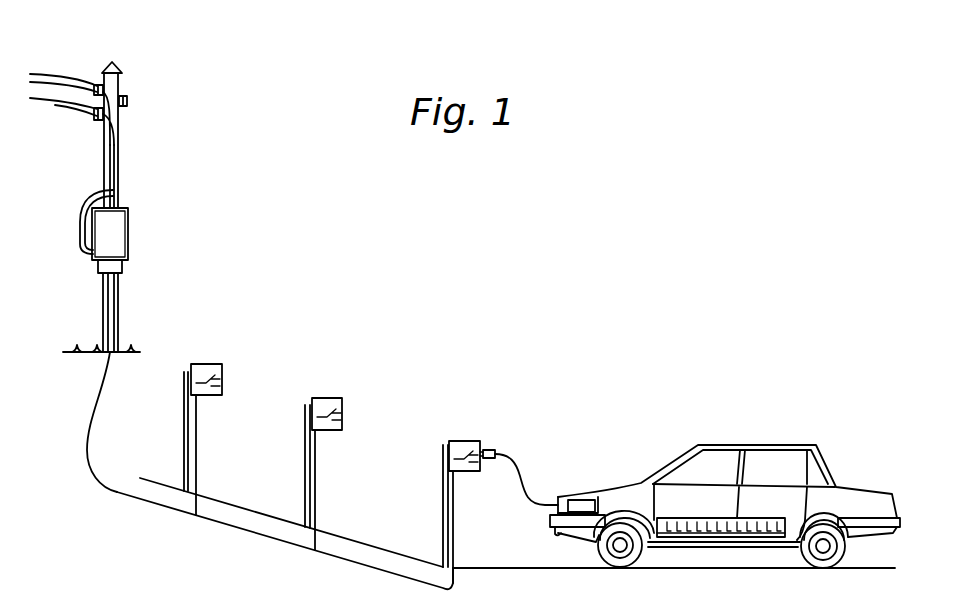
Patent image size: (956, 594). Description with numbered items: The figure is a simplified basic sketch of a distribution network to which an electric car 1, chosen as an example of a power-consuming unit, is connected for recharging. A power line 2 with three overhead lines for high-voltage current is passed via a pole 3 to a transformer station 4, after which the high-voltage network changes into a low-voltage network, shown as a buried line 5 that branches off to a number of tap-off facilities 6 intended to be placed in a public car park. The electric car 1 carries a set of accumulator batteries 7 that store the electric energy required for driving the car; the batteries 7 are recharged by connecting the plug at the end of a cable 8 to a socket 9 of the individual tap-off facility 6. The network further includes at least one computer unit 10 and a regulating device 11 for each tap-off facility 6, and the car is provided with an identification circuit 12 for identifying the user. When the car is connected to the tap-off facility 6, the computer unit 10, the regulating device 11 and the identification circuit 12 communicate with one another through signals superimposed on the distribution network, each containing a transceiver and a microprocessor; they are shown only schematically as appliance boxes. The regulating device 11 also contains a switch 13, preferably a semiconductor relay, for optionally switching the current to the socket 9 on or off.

The electric car 1 is at (725, 467).
The power line 2 is at (75, 67).
The pole 3 is at (117, 198).
The transformer station 4 is at (115, 237).
The buried line 5 is at (97, 407).
The tap-off facility 6 is at (476, 463).
The accumulator batteries 7 is at (673, 519).
The cable 8 is at (516, 461).
The socket 9 is at (484, 450).
The computer unit 10 is at (119, 270).
The regulating device 11 is at (467, 471).
The identification circuit 12 is at (580, 500).
The switch 13 is at (468, 452).